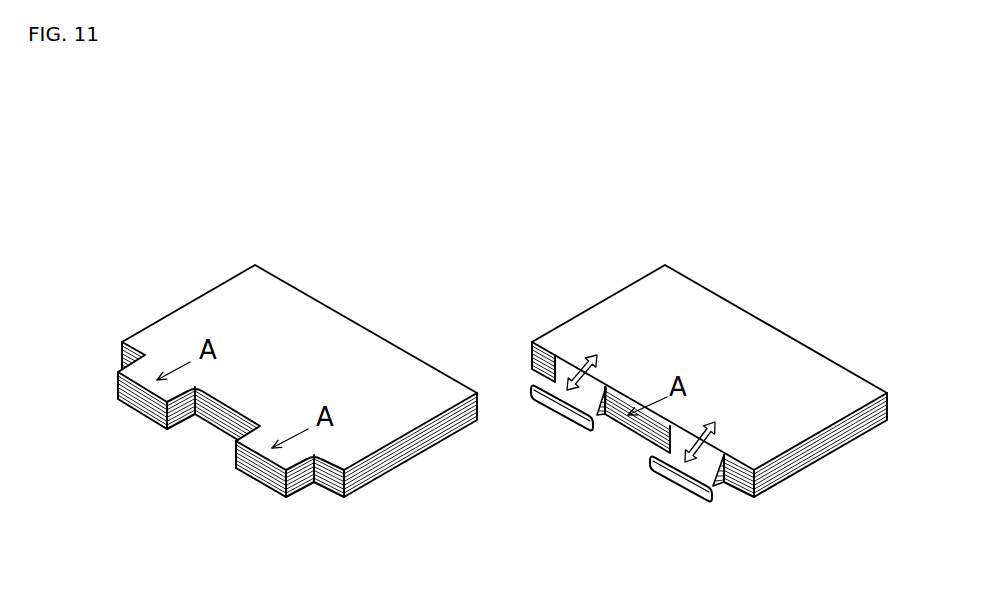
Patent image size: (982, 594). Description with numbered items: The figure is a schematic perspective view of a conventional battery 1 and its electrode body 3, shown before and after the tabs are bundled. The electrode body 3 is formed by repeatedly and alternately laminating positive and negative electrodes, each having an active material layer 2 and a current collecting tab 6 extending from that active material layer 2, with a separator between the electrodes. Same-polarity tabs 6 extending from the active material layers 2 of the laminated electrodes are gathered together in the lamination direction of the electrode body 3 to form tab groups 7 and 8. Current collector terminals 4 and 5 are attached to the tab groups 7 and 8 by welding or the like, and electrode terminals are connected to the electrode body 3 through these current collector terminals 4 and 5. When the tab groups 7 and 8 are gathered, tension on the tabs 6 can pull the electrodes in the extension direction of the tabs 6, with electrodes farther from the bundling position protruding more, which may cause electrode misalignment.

The battery 1 is at (157, 292).
The active material layer 2 is at (387, 432).
The electrode body 3 is at (204, 291).
The current collector terminal 4 is at (550, 398).
The current collector terminal 5 is at (670, 467).
The current collecting tab 6 is at (124, 376).
The tab group 7 is at (138, 418).
The tab group 8 is at (259, 486).